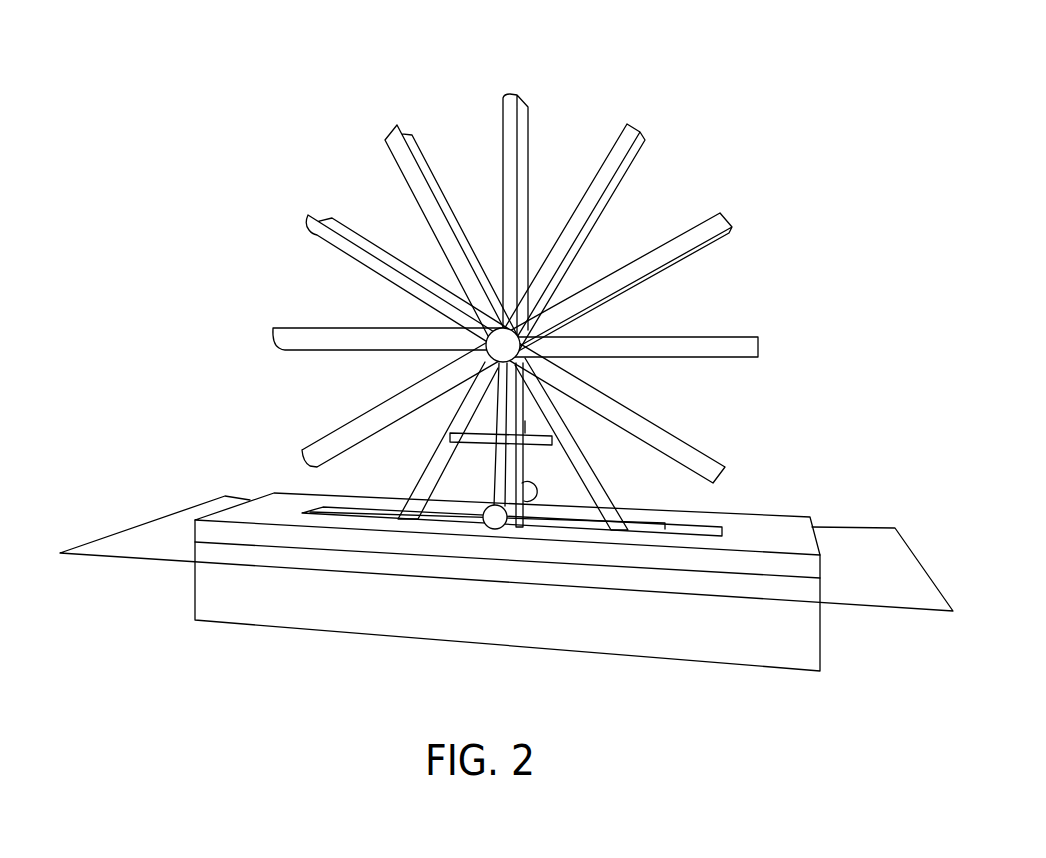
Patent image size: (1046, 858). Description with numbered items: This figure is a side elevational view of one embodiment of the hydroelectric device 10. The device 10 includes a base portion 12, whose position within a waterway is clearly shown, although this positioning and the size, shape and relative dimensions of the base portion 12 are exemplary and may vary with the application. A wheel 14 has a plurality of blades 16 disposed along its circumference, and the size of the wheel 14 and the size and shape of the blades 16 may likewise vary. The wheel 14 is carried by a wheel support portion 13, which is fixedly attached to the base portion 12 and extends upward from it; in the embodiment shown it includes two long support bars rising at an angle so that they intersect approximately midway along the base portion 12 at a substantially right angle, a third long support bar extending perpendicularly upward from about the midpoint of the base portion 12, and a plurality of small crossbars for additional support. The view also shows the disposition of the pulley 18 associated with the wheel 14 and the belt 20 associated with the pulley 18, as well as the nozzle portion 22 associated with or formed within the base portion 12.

The hydroelectric device 10 is at (506, 349).
The base portion 12 is at (507, 571).
The wheel support portion 13 is at (428, 488).
The wheel 14 is at (515, 255).
The blades 16 is at (522, 142).
The pulley 18 is at (487, 340).
The belt 20 is at (490, 422).
The nozzle portion 22 is at (680, 528).